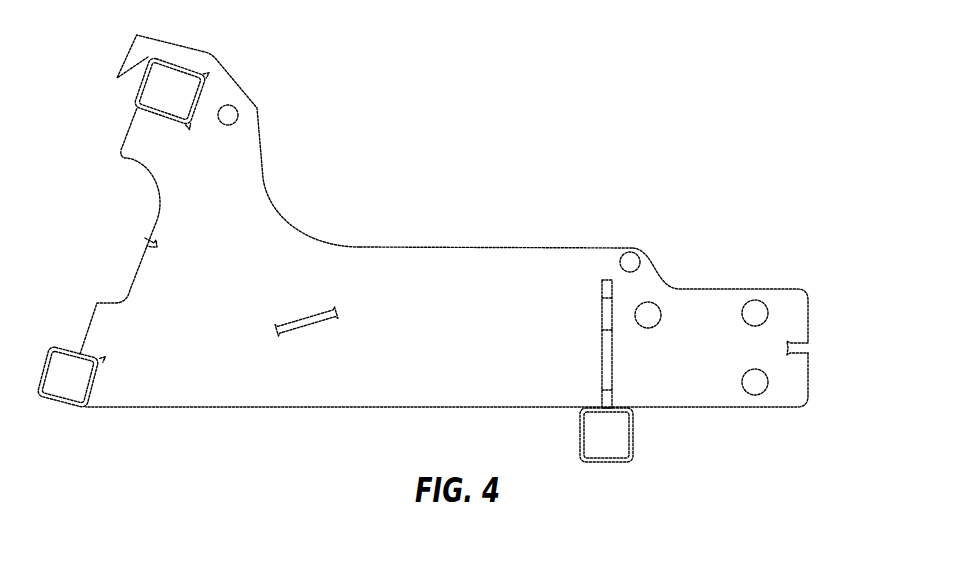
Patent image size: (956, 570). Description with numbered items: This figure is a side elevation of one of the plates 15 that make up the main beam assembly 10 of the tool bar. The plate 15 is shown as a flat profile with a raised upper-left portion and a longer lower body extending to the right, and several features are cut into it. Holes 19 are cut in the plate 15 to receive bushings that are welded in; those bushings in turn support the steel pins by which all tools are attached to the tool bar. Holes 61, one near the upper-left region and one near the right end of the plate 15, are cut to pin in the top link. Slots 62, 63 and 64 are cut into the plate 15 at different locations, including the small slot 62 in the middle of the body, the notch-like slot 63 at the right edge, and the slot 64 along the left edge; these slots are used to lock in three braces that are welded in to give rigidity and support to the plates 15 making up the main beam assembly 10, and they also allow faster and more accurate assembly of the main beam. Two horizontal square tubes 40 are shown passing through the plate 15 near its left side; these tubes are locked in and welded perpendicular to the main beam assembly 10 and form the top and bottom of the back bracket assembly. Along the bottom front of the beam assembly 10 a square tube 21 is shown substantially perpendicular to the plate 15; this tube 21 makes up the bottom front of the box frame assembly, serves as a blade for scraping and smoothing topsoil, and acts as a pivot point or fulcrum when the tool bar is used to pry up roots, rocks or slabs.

The main beam assembly 10 is at (360, 158).
The plate 15 is at (540, 260).
The holes 19 is at (648, 328).
The square tube 21 is at (606, 462).
The horizontal square tubes 40 is at (138, 93).
The holes 61 is at (237, 111).
The slot 62 is at (307, 328).
The slot 63 is at (808, 348).
The slot 64 is at (144, 243).